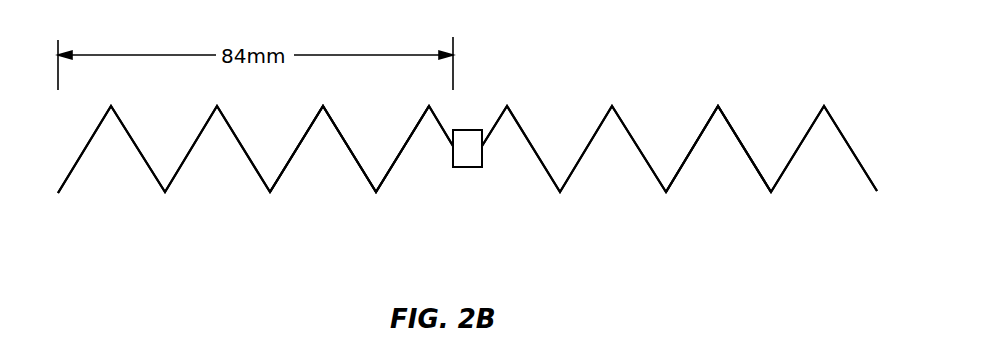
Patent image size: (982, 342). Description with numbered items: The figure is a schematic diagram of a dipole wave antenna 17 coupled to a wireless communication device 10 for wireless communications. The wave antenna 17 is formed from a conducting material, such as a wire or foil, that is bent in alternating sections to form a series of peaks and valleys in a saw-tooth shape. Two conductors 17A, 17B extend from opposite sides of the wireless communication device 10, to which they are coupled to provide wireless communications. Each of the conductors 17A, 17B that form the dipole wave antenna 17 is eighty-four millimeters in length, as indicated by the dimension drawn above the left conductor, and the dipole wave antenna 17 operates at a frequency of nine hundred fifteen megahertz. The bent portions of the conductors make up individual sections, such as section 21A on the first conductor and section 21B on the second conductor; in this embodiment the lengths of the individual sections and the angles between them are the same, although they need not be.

The wave antenna 17 is at (592, 74).
The conductor 17A is at (290, 163).
The conductor 17B is at (632, 135).
The section 21A is at (417, 125).
The section 21B is at (730, 118).
The wireless communication device 10 is at (468, 130).